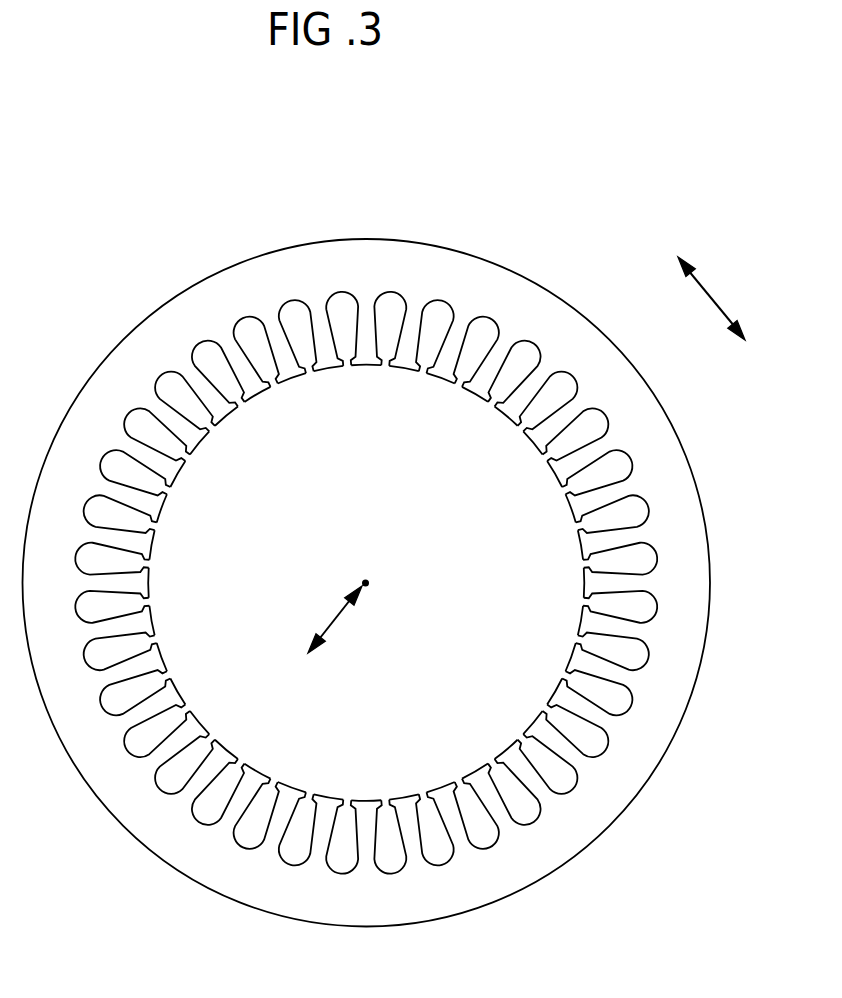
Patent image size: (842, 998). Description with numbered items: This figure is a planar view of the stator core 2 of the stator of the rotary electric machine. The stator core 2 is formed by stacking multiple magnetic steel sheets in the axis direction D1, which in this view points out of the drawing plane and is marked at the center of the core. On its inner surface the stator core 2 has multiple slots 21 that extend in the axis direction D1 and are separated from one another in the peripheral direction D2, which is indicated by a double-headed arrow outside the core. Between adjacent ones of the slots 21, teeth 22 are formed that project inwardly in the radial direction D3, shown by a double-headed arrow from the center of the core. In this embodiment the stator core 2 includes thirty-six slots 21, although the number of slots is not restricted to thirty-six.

The stator core 2 is at (540, 285).
The slots 21 is at (163, 490).
The teeth 22 is at (160, 660).
The axis direction D1 is at (369, 582).
The peripheral direction D2 is at (715, 293).
The radial direction D3 is at (337, 620).